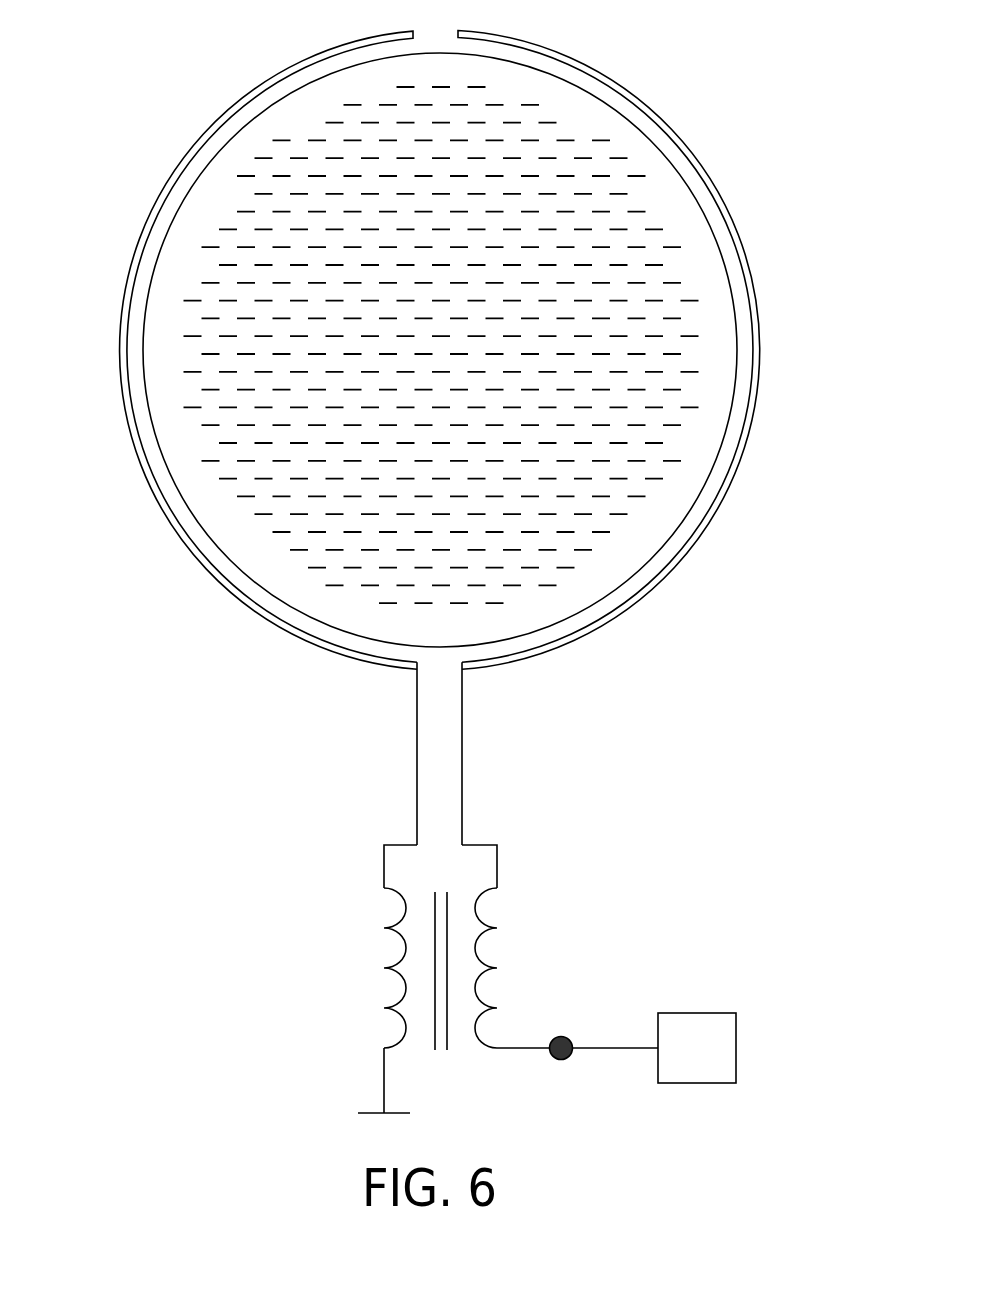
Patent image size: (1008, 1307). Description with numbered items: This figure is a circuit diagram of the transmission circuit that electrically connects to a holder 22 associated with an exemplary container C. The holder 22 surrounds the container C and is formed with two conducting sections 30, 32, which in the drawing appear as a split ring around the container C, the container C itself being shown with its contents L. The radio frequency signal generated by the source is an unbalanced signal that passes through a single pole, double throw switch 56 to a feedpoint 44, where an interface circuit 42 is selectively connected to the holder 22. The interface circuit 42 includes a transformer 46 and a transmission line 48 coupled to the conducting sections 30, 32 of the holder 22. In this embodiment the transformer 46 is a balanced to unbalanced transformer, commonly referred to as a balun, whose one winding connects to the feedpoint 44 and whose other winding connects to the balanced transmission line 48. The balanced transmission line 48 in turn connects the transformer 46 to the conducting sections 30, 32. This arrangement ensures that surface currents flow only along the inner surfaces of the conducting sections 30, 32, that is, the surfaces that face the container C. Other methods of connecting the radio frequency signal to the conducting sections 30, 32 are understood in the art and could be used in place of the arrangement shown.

The holder 22 is at (442, 345).
The conducting section 30 is at (120, 372).
The conducting section 32 is at (762, 350).
The container C is at (582, 93).
The liquid L is at (585, 447).
The transmission line 48 is at (462, 766).
The interface circuit 42 is at (408, 947).
The transformer 46 is at (384, 929).
The feedpoint 44 is at (562, 1036).
The single pole, double throw switch 56 is at (703, 1013).